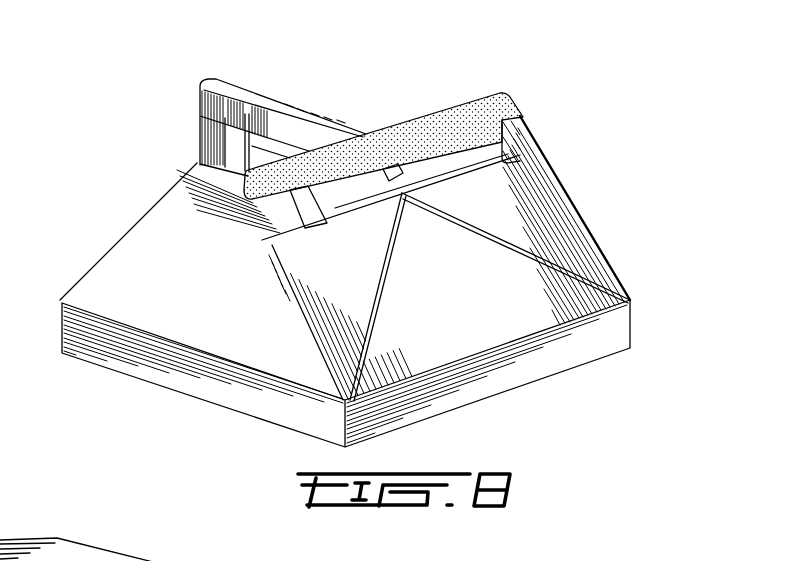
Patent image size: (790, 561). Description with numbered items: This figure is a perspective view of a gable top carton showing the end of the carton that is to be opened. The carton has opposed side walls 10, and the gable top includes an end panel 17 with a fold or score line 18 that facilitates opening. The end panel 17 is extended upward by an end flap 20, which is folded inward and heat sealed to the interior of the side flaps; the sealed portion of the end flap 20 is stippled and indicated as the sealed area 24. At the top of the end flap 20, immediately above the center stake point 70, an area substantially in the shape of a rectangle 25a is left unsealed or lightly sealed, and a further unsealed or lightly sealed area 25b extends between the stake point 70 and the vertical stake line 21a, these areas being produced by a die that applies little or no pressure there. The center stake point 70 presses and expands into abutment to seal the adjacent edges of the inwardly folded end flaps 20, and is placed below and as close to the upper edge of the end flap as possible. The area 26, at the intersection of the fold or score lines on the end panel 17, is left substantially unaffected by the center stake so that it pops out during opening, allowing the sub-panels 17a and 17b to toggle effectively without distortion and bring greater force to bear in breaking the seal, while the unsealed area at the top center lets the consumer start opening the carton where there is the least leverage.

The side wall 10 is at (622, 334).
The end panel 17 is at (534, 318).
The sub-panel 17a is at (312, 298).
The sub-panel 17b is at (576, 226).
The fold or score line 18 is at (388, 354).
The end flap 20 is at (512, 118).
The vertical stake line 21a is at (275, 227).
The sealed area 24 is at (507, 103).
The unsealed or lightly sealed rectangular area 25a is at (398, 164).
The unsealed or lightly sealed area 25b is at (463, 166).
The intersection area of fold or score lines 26 is at (395, 208).
The center stake point 70 is at (392, 190).